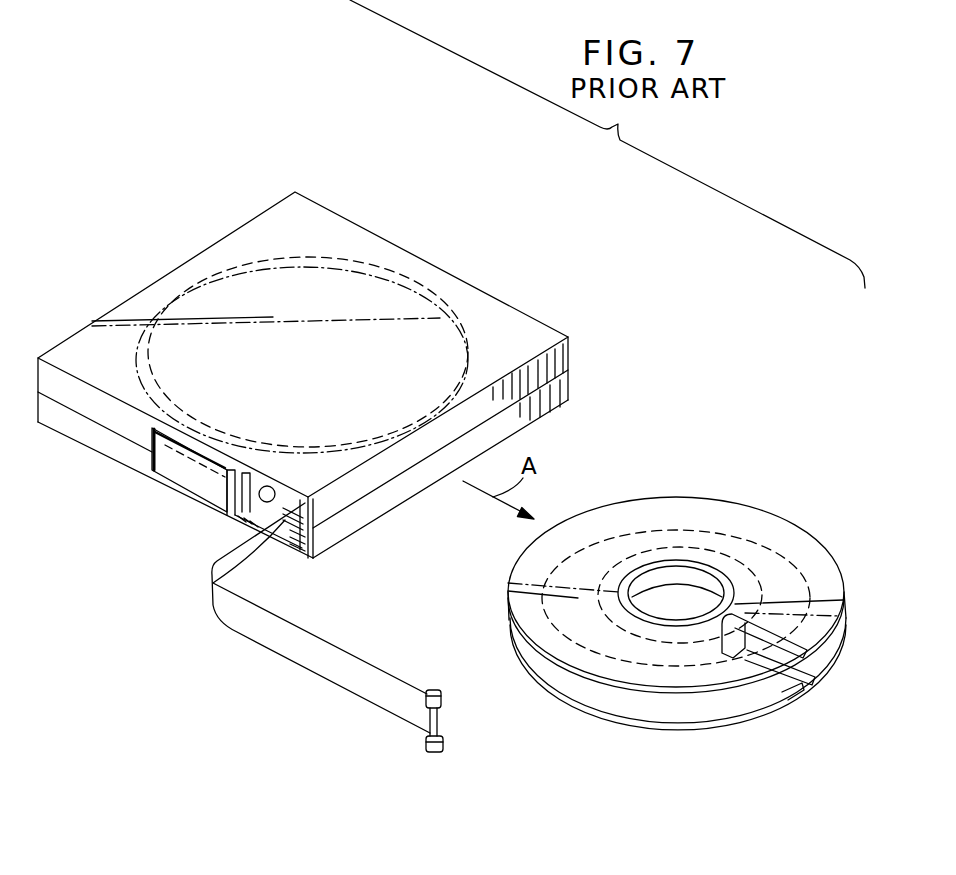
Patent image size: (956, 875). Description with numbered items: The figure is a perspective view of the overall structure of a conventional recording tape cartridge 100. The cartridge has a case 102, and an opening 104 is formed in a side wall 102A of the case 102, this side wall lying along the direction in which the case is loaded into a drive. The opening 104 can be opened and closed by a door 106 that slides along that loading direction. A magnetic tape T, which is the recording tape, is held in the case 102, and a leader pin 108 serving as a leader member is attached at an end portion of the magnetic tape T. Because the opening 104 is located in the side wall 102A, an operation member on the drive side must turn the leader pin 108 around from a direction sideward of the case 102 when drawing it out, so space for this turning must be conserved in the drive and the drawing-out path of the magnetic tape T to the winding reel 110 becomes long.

The recording tape cartridge 100 is at (522, 213).
The case 102 is at (418, 257).
The side wall 102A is at (102, 443).
The opening 104 is at (275, 497).
The door 106 is at (193, 478).
The leader pin 108 is at (440, 713).
The winding reel 110 is at (815, 535).
The magnetic tape T is at (344, 678).